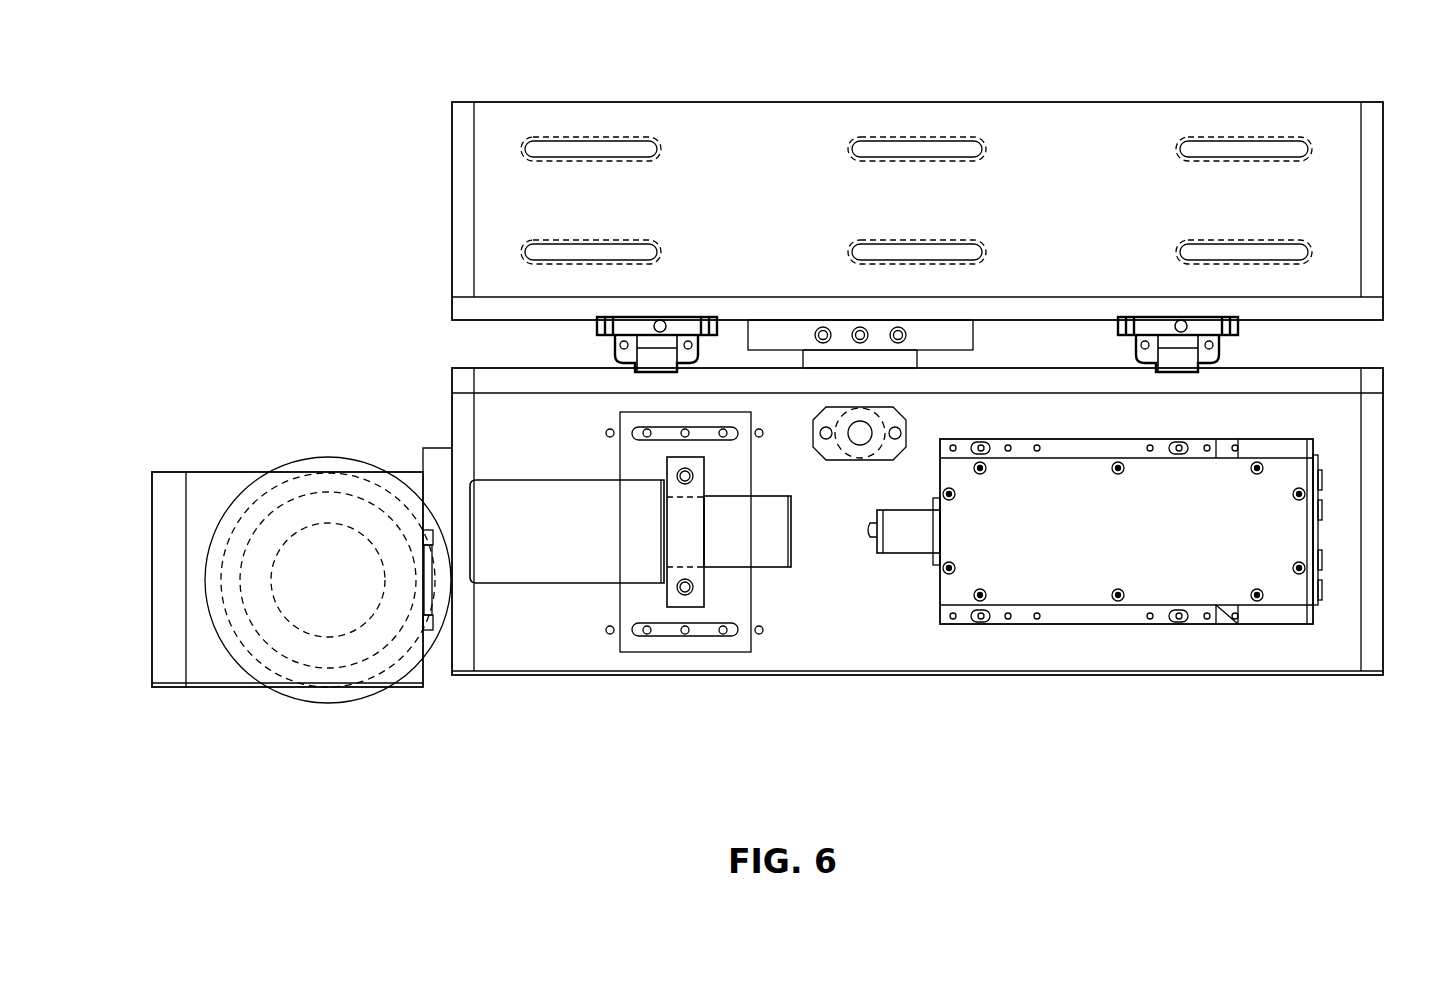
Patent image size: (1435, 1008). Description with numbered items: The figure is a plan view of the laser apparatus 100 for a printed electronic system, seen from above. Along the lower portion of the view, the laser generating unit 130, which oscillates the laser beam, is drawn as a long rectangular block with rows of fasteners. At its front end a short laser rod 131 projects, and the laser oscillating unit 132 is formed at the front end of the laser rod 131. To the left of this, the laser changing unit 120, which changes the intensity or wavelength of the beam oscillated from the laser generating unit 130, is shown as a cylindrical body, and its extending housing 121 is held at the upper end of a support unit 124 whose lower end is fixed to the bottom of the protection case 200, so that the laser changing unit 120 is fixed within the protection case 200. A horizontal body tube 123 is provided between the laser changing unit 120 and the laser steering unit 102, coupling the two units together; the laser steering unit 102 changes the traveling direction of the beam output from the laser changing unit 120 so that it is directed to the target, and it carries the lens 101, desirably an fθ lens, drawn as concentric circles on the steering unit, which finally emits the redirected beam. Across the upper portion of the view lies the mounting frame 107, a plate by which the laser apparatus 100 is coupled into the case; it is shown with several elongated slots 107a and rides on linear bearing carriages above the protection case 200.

The laser apparatus 100 is at (420, 365).
The lens 101 is at (328, 700).
The laser steering unit 102 is at (215, 481).
The mounting frame 107 is at (760, 132).
The slot 107a is at (590, 148).
The laser changing unit 120 is at (546, 578).
The extending housing 121 is at (733, 557).
The horizontal body tube 123 is at (434, 450).
The support unit 124 is at (683, 557).
The laser generating unit 130 is at (1147, 590).
The laser rod 131 is at (907, 548).
The laser oscillating unit 132 is at (868, 530).
The protection case 200 is at (1297, 676).